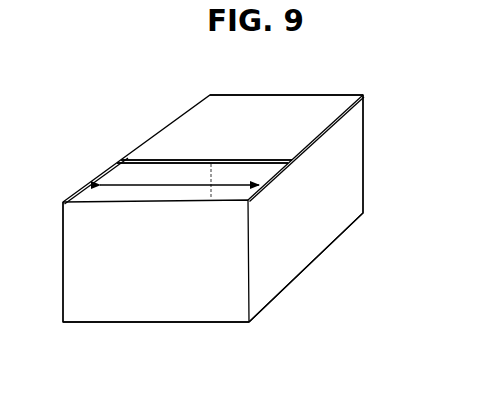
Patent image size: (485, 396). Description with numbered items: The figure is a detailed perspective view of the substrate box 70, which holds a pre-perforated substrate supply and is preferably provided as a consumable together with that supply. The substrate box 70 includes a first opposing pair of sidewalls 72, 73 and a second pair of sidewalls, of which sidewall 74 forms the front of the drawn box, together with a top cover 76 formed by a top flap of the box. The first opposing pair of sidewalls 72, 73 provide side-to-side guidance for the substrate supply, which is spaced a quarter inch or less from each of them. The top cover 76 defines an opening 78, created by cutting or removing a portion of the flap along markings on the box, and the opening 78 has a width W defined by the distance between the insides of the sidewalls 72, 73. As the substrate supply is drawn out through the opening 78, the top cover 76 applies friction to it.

The substrate box 70 is at (368, 97).
The sidewall 72 is at (62, 241).
The sidewall 73 is at (302, 230).
The sidewall 74 is at (128, 306).
The top cover 76 is at (261, 107).
The opening 78 is at (129, 173).
The width of the opening W is at (177, 185).